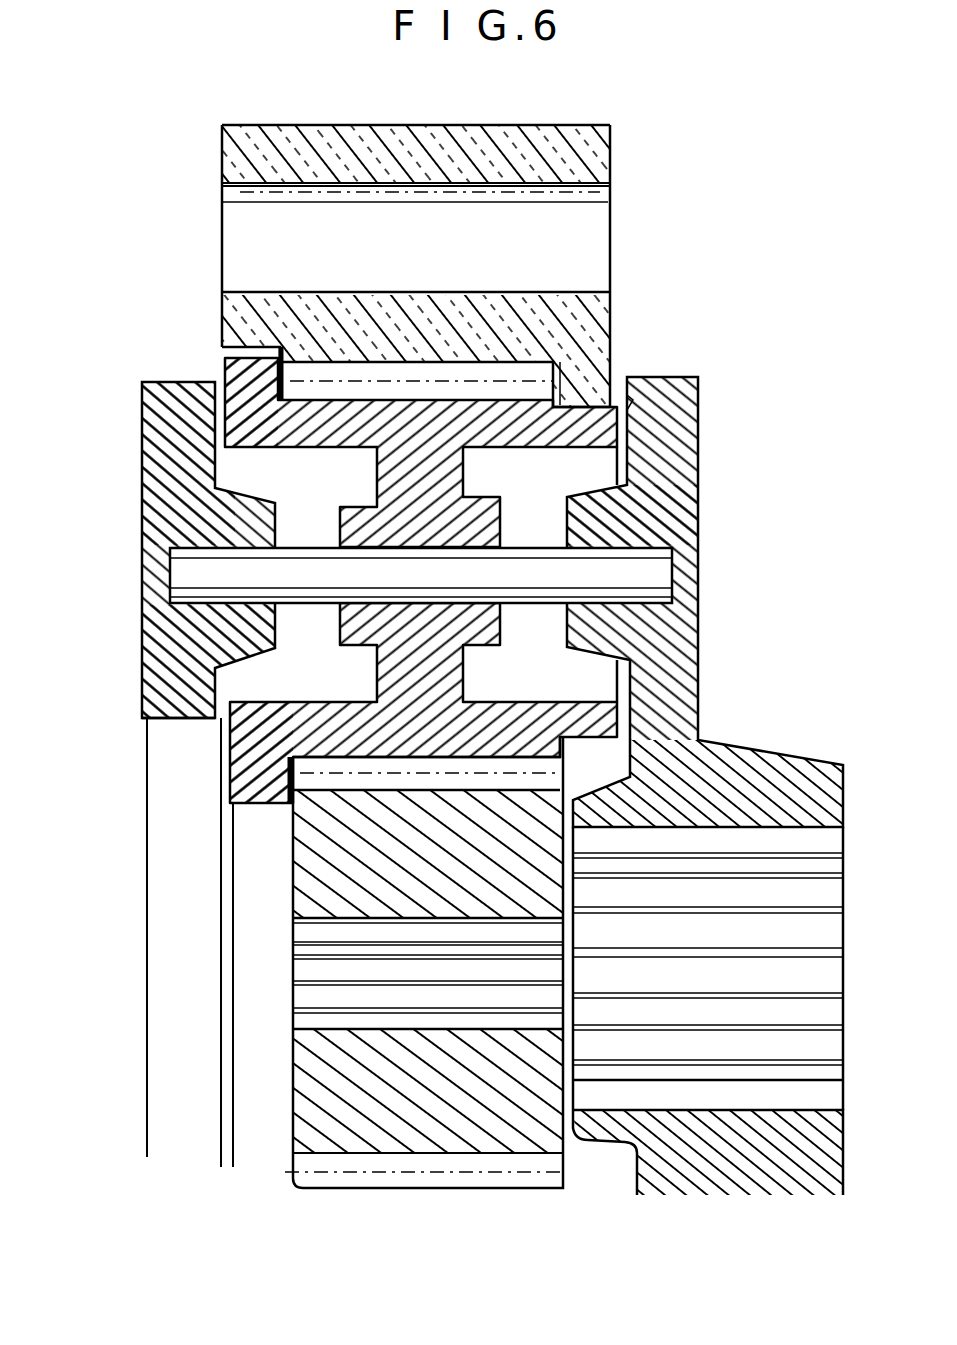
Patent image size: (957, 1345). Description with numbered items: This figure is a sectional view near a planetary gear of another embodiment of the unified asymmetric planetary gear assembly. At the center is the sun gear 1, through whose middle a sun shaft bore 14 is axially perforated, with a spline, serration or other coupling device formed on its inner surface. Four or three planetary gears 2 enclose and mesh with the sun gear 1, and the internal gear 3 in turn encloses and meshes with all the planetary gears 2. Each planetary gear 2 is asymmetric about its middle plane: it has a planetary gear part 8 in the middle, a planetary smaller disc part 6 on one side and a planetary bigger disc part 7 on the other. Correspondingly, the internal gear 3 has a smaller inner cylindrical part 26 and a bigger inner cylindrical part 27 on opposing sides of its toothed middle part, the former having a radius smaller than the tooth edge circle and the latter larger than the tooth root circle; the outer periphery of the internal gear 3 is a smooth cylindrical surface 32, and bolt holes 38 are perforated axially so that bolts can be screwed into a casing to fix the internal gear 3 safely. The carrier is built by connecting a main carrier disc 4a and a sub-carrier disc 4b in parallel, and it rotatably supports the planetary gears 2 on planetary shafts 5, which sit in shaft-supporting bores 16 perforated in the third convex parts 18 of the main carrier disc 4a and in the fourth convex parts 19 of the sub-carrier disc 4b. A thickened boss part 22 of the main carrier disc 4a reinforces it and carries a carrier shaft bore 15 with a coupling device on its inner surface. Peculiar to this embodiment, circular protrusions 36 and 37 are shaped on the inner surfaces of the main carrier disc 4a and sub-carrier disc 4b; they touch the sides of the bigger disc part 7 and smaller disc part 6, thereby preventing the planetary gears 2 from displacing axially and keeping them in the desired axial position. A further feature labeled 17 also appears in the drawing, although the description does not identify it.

The sun gear 1 is at (315, 1105).
The planetary gears 2 is at (619, 416).
The internal gear 3 is at (222, 283).
The main carrier disc 4a is at (683, 710).
The sub-carrier disc 4b is at (152, 676).
The planetary shafts 5 is at (190, 582).
The planetary smaller disc part 6 is at (617, 403).
The planetary bigger disc part 7 is at (218, 372).
The planetary gear part 8 is at (412, 778).
The sun shaft bore 14 is at (322, 982).
The carrier shaft bore 15 is at (765, 1037).
The shaft-supporting bores 16 is at (197, 519).
The housing bottom face 17 is at (185, 720).
The third convex parts 18 is at (585, 523).
The fourth convex parts 19 is at (232, 637).
The boss part 22 is at (603, 1130).
The smaller inner cylindrical part 26 is at (590, 403).
The bigger inner cylindrical part 27 is at (243, 346).
The smooth cylindrical surface 32 is at (358, 125).
The circular protrusion 36 is at (700, 437).
The circular protrusion 37 is at (220, 434).
The bolt holes 38 is at (500, 223).